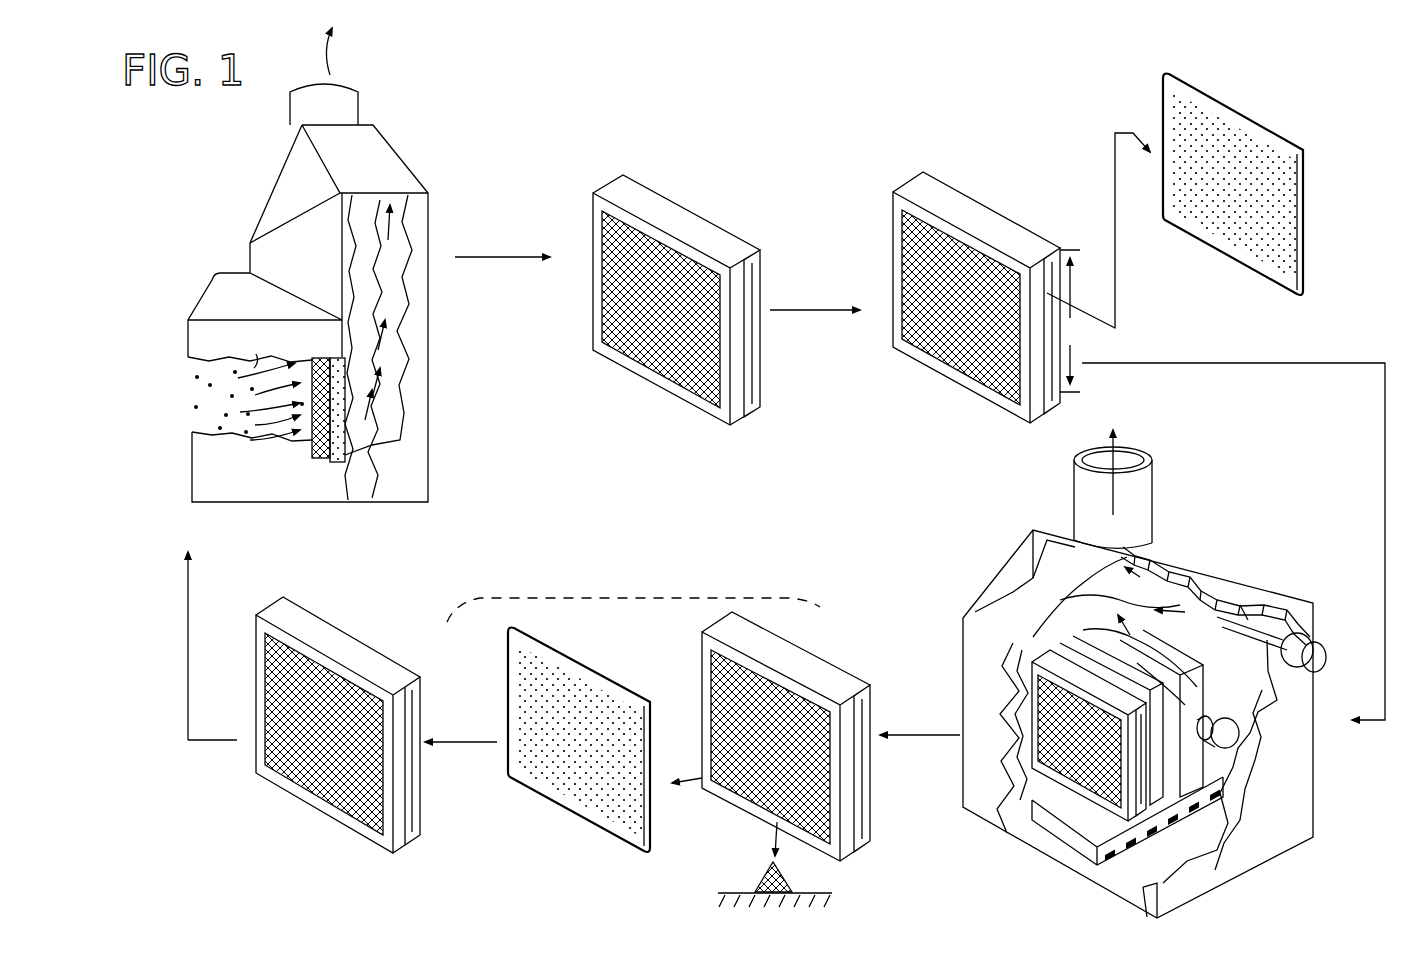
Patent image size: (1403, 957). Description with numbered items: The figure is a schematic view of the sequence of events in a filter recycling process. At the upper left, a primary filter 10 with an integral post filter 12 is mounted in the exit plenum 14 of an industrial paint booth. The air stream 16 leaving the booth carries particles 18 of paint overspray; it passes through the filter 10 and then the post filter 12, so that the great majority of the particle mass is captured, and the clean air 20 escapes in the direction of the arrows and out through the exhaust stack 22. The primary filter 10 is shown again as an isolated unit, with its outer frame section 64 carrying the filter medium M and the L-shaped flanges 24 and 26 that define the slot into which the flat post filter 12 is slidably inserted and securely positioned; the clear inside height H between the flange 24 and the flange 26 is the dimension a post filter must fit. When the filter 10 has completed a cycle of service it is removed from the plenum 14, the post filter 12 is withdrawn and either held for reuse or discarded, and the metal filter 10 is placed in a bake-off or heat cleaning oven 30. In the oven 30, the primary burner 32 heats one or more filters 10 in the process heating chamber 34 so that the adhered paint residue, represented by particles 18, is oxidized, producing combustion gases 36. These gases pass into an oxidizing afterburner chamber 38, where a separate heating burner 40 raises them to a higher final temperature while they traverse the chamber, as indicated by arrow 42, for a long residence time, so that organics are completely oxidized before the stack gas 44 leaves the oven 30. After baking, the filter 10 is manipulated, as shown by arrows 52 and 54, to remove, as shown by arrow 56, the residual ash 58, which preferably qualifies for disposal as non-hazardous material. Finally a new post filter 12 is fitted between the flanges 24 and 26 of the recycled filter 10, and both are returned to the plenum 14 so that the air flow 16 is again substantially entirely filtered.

The primary filter 10 is at (318, 460).
The post filter 12 is at (338, 462).
The exit plenum 14 is at (192, 336).
The air stream 16 is at (205, 408).
The particles 18 is at (300, 345).
The clean air 20 is at (336, 52).
The exhaust stack 22 is at (360, 102).
The L-shaped flange 24 is at (760, 268).
The L-shaped flange 26 is at (760, 396).
The oven 30 is at (1213, 541).
The primary burner 32 is at (1227, 747).
The process heating chamber 34 is at (1262, 695).
The combustion gases 36 is at (1125, 640).
The oxidizing afterburner chamber 38 is at (1093, 587).
The heating burner 40 is at (1330, 632).
The gases traversing afterburner chamber 42 is at (1165, 545).
The stack gas 44 is at (1148, 452).
The manipulation direction arrow 52 is at (872, 808).
The manipulation direction arrow 54 is at (700, 790).
The ash removal arrow 56 is at (755, 866).
The residual ash 58 is at (755, 886).
The outer frame section 64 is at (710, 238).
The filter medium M is at (655, 366).
The clear inside height H is at (1069, 321).